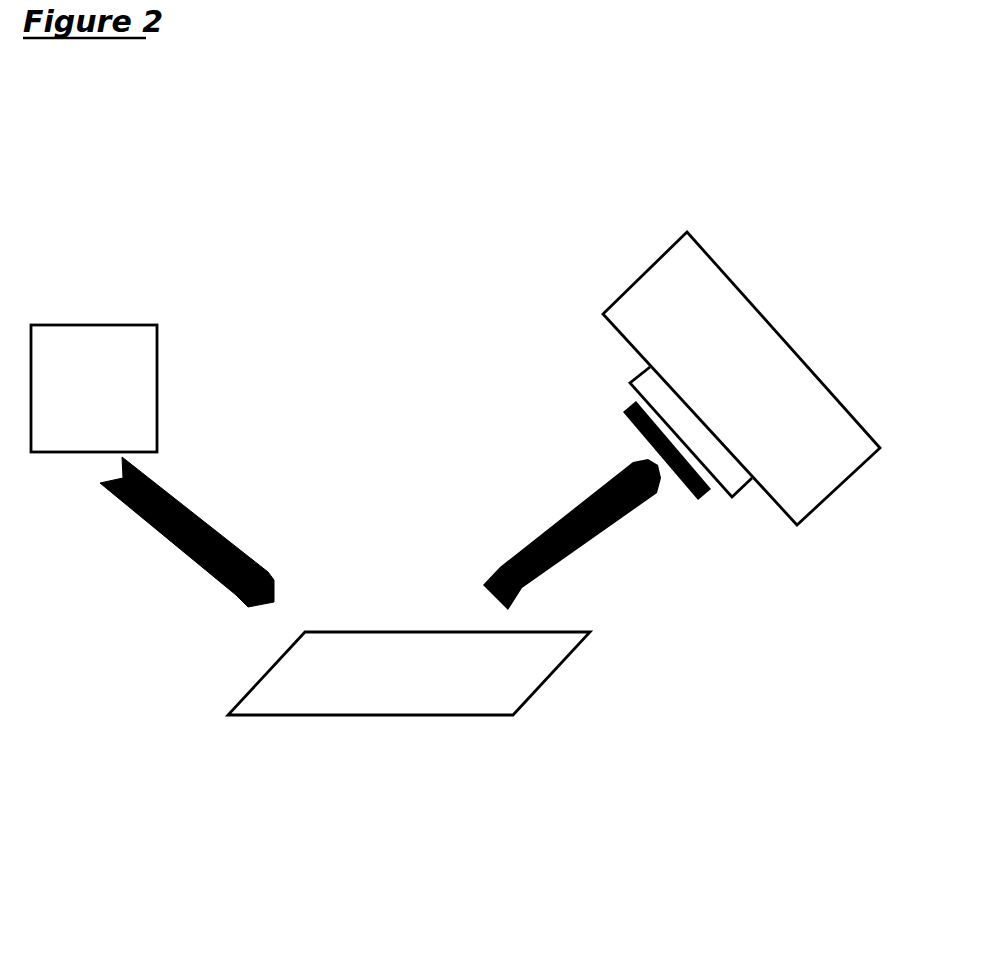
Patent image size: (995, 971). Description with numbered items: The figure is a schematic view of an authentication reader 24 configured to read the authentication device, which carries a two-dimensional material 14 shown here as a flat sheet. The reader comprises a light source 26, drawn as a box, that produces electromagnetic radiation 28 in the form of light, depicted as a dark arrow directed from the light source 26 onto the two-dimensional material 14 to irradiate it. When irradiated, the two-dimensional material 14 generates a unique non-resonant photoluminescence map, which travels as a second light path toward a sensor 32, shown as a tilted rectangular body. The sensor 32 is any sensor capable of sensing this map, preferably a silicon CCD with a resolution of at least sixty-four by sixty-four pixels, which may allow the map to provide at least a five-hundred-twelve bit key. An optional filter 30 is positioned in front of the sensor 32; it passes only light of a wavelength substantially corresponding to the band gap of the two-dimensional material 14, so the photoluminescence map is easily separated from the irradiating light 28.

The two-dimensional material 14 is at (432, 693).
The authentication reader 24 is at (320, 216).
The light source 26 is at (90, 353).
The electromagnetic radiation 28 is at (223, 547).
The filter 30 is at (705, 493).
The sensor 32 is at (843, 452).